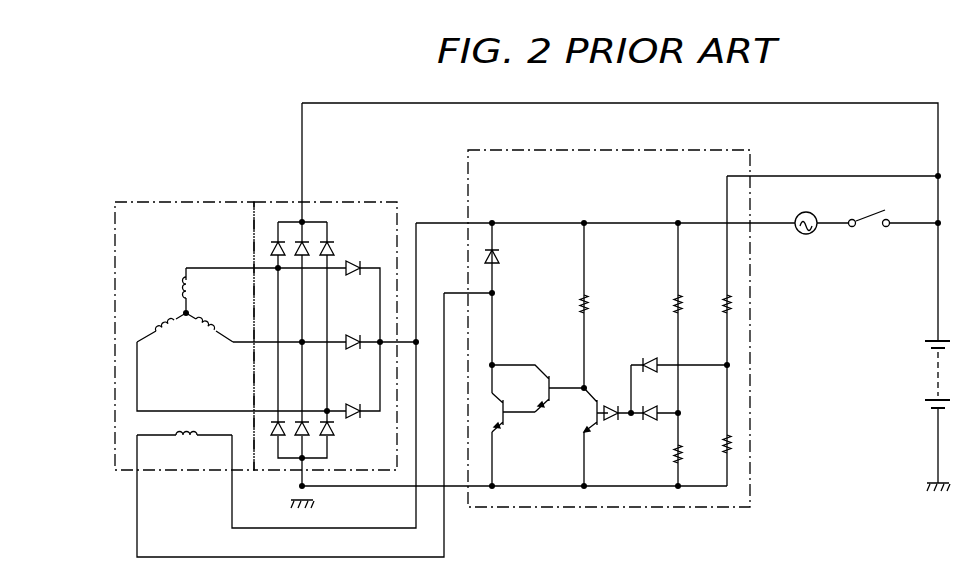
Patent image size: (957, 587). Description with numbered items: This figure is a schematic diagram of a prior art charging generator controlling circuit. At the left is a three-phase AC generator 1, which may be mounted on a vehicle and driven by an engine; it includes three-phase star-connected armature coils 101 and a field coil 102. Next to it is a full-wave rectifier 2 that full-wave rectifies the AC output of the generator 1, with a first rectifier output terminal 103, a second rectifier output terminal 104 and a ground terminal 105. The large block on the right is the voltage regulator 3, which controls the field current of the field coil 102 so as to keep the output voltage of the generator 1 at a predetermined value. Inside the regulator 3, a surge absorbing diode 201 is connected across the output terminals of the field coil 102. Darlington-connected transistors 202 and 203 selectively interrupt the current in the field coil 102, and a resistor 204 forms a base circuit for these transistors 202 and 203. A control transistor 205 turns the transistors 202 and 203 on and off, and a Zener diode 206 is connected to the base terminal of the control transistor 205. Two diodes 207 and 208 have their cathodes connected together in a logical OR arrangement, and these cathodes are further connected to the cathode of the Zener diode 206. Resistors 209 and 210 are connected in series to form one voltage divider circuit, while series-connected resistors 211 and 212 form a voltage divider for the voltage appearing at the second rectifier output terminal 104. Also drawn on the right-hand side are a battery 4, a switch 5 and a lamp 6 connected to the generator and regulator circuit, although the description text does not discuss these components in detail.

The three-phase AC generator 1 is at (173, 211).
The full-wave rectifier 2 is at (318, 211).
The voltage regulator 3 is at (607, 150).
The battery 4 is at (925, 373).
The key switch 5 is at (877, 228).
The charge indicator lamp 6 is at (816, 212).
The armature coils 101 is at (184, 322).
The field coil 102 is at (180, 438).
The first rectifier output terminal 103 is at (333, 236).
The second rectifier output terminal 104 is at (377, 327).
The ground terminal 105 is at (331, 446).
The surge absorbing diode 201 is at (500, 257).
The transistor 202 is at (500, 431).
The transistor 203 is at (546, 377).
The resistor 204 is at (578, 309).
The control transistor 205 is at (590, 417).
The Zener diode 206 is at (614, 426).
The diode 207 is at (650, 357).
The diode 208 is at (647, 421).
The resistor 209 is at (722, 306).
The resistor 210 is at (722, 447).
The resistor 211 is at (672, 305).
The resistor 212 is at (672, 458).